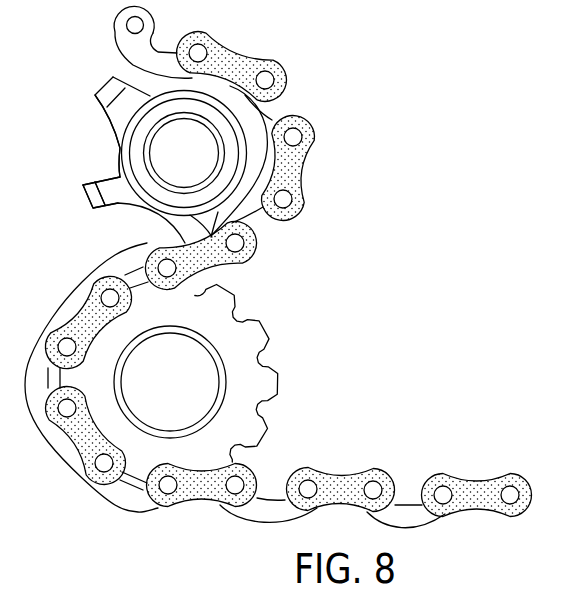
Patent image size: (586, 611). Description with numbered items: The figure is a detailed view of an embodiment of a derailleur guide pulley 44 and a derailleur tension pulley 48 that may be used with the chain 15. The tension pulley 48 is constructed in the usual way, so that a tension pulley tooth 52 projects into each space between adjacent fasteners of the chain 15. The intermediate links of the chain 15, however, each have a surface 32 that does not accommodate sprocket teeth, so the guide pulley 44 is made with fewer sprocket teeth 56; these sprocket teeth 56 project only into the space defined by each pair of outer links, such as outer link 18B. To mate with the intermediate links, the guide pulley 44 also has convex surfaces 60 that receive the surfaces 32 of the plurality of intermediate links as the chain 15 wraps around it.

The chain 15 is at (278, 280).
The outer link 18B is at (502, 472).
The convex surface 32 is at (136, 66).
The derailleur guide pulley 44 is at (147, 127).
The derailleur tension pulley 48 is at (227, 348).
The tension pulley tooth 52 is at (282, 384).
The sprocket tooth 56 is at (82, 192).
The convex surface 60 is at (118, 148).